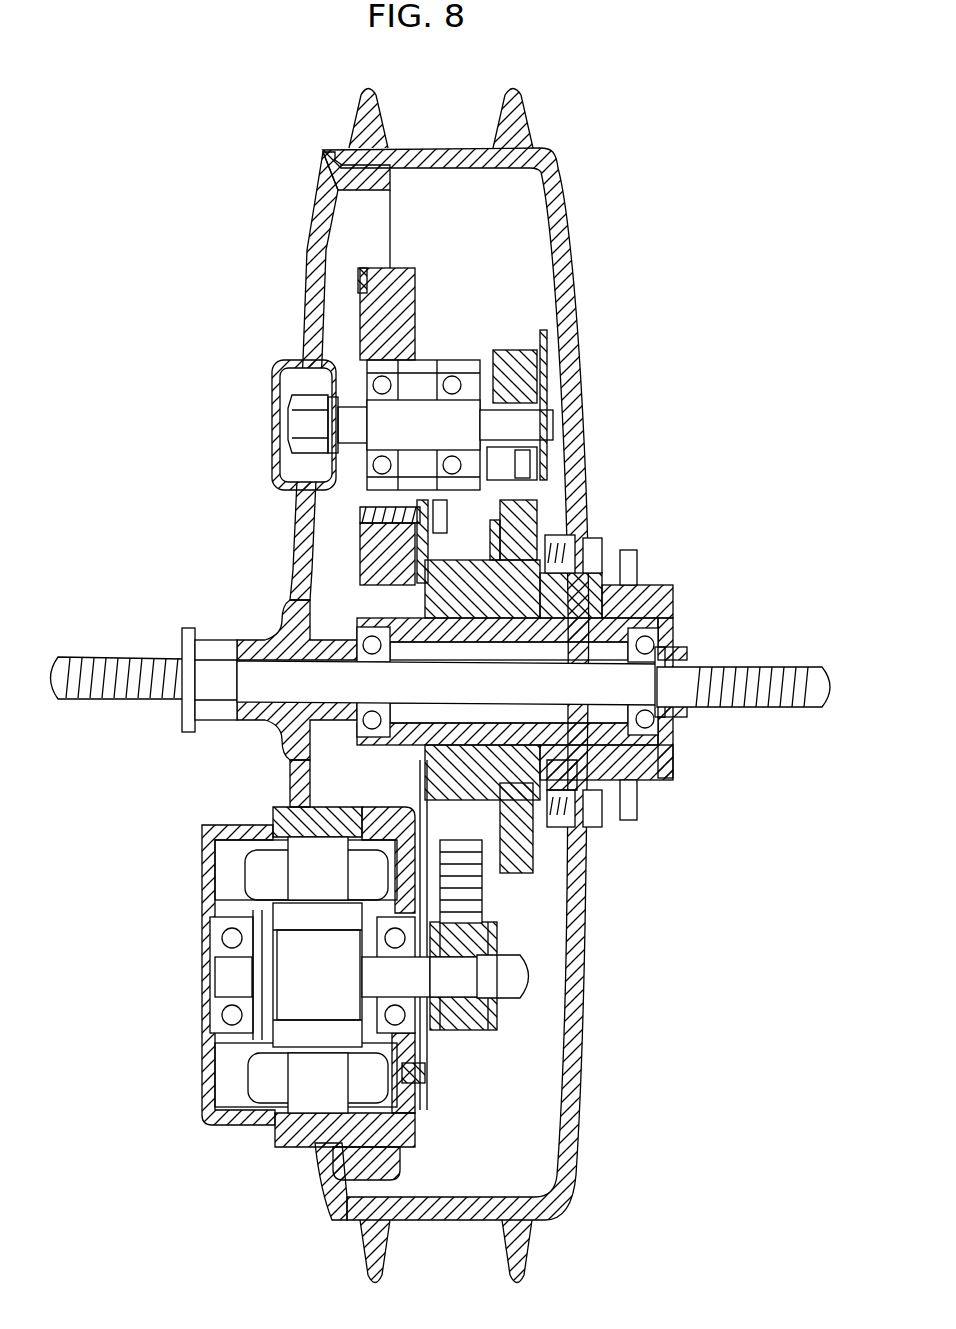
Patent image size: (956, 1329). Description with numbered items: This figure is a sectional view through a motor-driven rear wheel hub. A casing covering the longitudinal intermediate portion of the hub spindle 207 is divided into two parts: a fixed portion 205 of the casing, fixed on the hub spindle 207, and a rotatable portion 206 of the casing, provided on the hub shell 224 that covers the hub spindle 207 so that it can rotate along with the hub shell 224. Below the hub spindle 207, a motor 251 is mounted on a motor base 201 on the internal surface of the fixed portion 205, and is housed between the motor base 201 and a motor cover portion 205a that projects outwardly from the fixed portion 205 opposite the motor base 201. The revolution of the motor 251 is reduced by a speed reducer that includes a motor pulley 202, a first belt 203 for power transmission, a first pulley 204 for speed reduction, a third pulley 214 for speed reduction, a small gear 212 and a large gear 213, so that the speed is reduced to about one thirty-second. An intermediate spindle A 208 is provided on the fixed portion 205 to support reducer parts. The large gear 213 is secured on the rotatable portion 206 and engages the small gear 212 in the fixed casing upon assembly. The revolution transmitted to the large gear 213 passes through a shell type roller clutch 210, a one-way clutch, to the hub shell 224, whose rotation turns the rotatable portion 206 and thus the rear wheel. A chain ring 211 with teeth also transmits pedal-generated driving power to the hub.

The motor base 201 is at (377, 1122).
The motor pulley 202 is at (490, 1005).
The first belt 203 is at (483, 902).
The first pulley 204 is at (478, 828).
The fixed portion of the casing 205 is at (295, 548).
The motor cover portion 205a is at (200, 891).
The rotatable portion of the casing 206 is at (577, 270).
The hub spindle 207 is at (777, 672).
The intermediate spindle A 208 is at (542, 418).
The shell type roller clutch 210 is at (565, 557).
The chain ring 211 is at (663, 600).
The small gear 212 is at (553, 355).
The large gear 213 is at (535, 517).
The third pulley 214 is at (370, 310).
The hub shell 224 is at (612, 735).
The motor 251 is at (297, 1008).